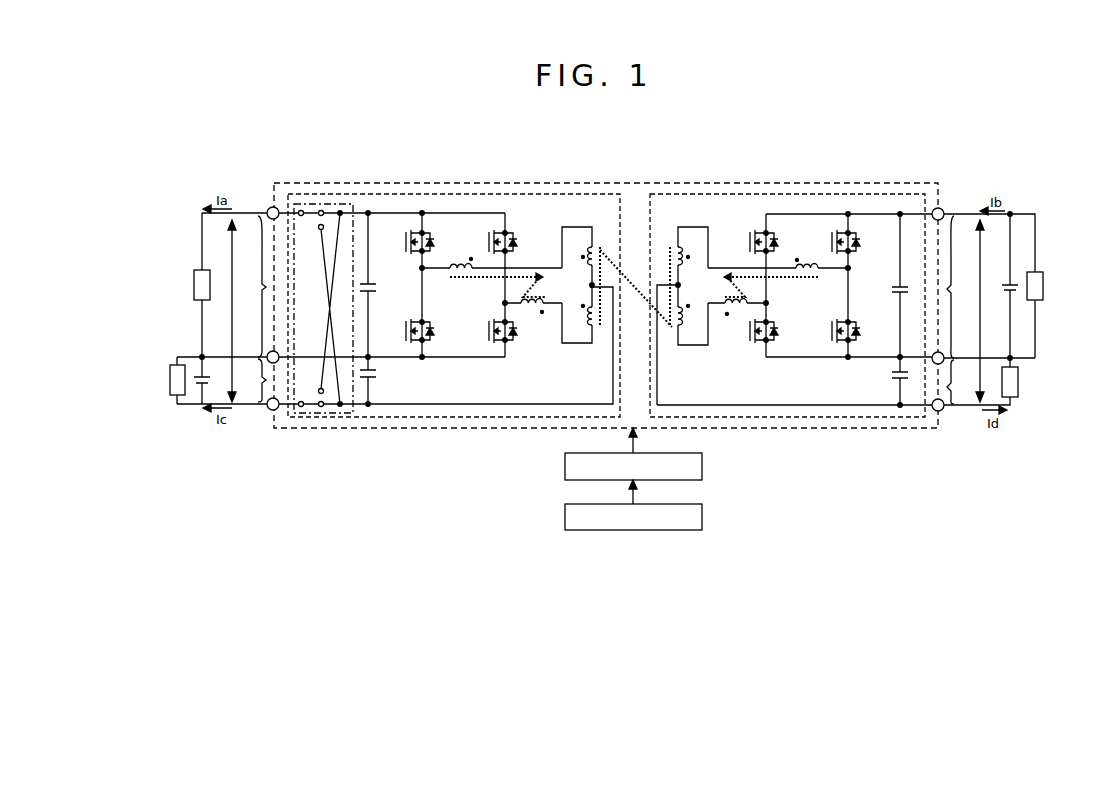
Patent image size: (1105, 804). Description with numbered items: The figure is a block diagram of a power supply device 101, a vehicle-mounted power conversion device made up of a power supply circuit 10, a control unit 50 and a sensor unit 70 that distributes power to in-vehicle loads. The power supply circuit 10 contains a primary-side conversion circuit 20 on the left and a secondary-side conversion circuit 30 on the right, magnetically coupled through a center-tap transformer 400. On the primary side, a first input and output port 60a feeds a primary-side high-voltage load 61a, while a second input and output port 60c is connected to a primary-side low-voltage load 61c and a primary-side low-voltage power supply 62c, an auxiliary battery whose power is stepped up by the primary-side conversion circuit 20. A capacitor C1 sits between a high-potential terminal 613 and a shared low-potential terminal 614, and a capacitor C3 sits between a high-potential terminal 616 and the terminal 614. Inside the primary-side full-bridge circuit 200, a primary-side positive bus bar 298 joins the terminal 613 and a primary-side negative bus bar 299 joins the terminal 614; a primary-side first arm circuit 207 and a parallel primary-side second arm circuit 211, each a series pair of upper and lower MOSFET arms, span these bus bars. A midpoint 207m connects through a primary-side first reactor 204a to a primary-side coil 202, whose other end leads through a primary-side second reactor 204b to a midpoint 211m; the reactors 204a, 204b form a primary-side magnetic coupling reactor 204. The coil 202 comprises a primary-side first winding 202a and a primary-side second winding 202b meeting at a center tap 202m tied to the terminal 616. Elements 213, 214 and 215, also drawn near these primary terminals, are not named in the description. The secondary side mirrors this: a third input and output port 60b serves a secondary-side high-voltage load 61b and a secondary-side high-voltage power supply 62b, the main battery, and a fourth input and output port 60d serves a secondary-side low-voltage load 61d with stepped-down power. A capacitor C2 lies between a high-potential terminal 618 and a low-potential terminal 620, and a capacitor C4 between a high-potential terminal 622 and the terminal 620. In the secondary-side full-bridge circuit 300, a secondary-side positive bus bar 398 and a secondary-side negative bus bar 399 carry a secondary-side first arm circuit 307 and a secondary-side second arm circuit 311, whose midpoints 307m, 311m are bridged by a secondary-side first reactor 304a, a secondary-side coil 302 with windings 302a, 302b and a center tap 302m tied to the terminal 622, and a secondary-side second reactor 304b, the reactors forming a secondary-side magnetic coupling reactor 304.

The power supply device 101 is at (256, 151).
The power supply circuit 10 is at (868, 183).
The primary-side conversion circuit 20 is at (478, 186).
The secondary-side conversion circuit 30 is at (795, 186).
The primary-side full-bridge circuit 200 is at (533, 194).
The secondary-side full-bridge circuit 300 is at (740, 194).
The primary-side coil 202 is at (571, 262).
The primary-side first winding 202a is at (590, 246).
The primary-side second winding 202b is at (590, 343).
The center tap 202m is at (590, 285).
The secondary-side coil 302 is at (699, 266).
The secondary-side first winding 302a is at (684, 246).
The secondary-side second winding 302b is at (680, 330).
The center tap 302m is at (682, 285).
The transformer 400 is at (640, 272).
The primary-side magnetic coupling reactor 204 is at (492, 282).
The primary-side first reactor 204a is at (456, 262).
The primary-side second reactor 204b is at (538, 308).
The secondary-side magnetic coupling reactor 304 is at (776, 293).
The secondary-side first reactor 304a is at (806, 262).
The secondary-side second reactor 304b is at (735, 308).
The primary-side first arm circuit 207 is at (412, 349).
The midpoint 207m is at (420, 268).
The primary-side second arm circuit 211 is at (493, 349).
The midpoint 211m is at (505, 303).
The secondary-side first arm circuit 307 is at (826, 348).
The midpoint 307m is at (848, 268).
The secondary-side second arm circuit 311 is at (746, 348).
The midpoint 311m is at (768, 304).
The switching circuit 213 is at (354, 204).
The switch 214 is at (320, 229).
The switch 215 is at (319, 389).
The primary-side positive bus bar 298 is at (393, 213).
The primary-side negative bus bar 299 is at (386, 358).
The secondary-side positive bus bar 398 is at (868, 214).
The secondary-side negative bus bar 399 is at (878, 358).
The capacitor C1 is at (377, 285).
The capacitor C2 is at (891, 285).
The capacitor C3 is at (358, 380).
The capacitor C4 is at (909, 381).
The high-potential terminal 613 is at (272, 207).
The low-potential terminal 614 is at (280, 353).
The high-potential terminal 616 is at (270, 411).
The high-potential terminal 618 is at (942, 208).
The low-potential terminal 620 is at (932, 353).
The high-potential terminal 622 is at (942, 412).
The first input and output port 60a is at (233, 285).
The third input and output port 60b is at (990, 275).
The second input and output port 60c is at (221, 381).
The fourth input and output port 60d is at (989, 397).
The primary-side high-voltage load 61a is at (206, 270).
The secondary-side high-voltage load 61b is at (1034, 271).
The primary-side low-voltage load 61c is at (177, 400).
The secondary-side low-voltage load 61d is at (1014, 400).
The secondary-side high-voltage power supply 62b is at (1008, 292).
The primary-side low-voltage power supply 62c is at (200, 375).
The control unit 50 is at (703, 468).
The sensor unit 70 is at (703, 518).